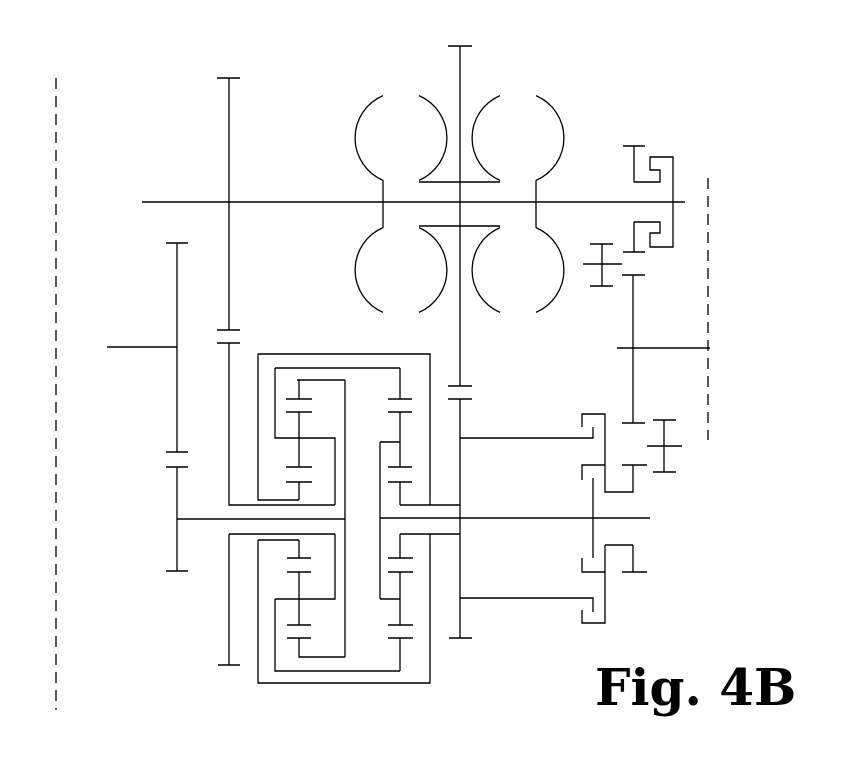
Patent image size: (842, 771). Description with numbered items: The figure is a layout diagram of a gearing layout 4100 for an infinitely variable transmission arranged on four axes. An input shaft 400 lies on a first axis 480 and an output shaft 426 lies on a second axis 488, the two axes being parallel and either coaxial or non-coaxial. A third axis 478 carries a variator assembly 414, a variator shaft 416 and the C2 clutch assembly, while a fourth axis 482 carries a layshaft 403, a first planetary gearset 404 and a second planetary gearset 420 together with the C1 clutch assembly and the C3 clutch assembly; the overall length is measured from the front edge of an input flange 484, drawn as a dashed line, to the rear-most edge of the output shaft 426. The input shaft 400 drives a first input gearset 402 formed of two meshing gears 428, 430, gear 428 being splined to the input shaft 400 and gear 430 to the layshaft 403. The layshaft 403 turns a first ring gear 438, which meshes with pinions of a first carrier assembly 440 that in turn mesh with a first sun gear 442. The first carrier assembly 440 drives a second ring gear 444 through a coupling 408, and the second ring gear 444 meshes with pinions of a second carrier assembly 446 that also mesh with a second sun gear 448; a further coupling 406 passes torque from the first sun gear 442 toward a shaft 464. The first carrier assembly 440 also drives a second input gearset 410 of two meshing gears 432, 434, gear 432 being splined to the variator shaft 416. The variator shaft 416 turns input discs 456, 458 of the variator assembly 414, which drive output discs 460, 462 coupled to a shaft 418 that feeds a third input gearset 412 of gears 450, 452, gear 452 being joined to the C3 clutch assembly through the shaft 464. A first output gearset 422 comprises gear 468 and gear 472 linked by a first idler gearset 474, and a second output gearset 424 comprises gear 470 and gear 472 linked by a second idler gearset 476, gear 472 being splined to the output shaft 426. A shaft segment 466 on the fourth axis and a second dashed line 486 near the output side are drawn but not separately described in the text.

The gearing layout 4100 is at (135, 68).
The input shaft 400 is at (133, 347).
The first input gearset 402 is at (175, 585).
The layshaft 403 is at (205, 519).
The first planetary gearset 404 is at (285, 698).
The coupling 406 is at (346, 354).
The coupling 408 is at (375, 368).
The second input gearset 410 is at (222, 676).
The third input gearset 412 is at (463, 649).
The variator assembly 414 is at (335, 73).
The variator shaft 416 is at (288, 202).
The shaft 418 is at (487, 212).
The second planetary gearset 420 is at (417, 697).
The first output gearset 422 is at (640, 128).
The second output gearset 424 is at (633, 582).
The output shaft 426 is at (688, 348).
The gear 428 is at (177, 407).
The gear 430 is at (177, 548).
The gear 432 is at (229, 160).
The gear 434 is at (229, 618).
The first ring gear 438 is at (318, 380).
The first carrier assembly 440 is at (299, 428).
The first sun gear 442 is at (299, 453).
The second ring gear 444 is at (400, 385).
The second carrier assembly 446 is at (400, 425).
The second sun gear 448 is at (400, 491).
The gear 450 is at (460, 335).
The gear 452 is at (463, 562).
The input disc 456 is at (357, 122).
The input disc 458 is at (557, 108).
The output disc 460 is at (438, 108).
The output disc 462 is at (472, 130).
The shaft 464 is at (517, 438).
The shaft 466 is at (538, 518).
The gear 468 is at (634, 165).
The gear 470 is at (634, 560).
The gear 472 is at (633, 320).
The first idler gearset 474 is at (596, 260).
The second idler gearset 476 is at (665, 460).
The third axis 478 is at (133, 202).
The first axis 480 is at (107, 347).
The fourth axis 482 is at (162, 519).
The input flange 484 is at (56, 128).
The housing 486 is at (708, 266).
The second axis 488 is at (718, 348).
The C1 clutch assembly C1 is at (585, 518).
The C2 clutch assembly C2 is at (679, 144).
The C3 clutch assembly C3 is at (606, 445).